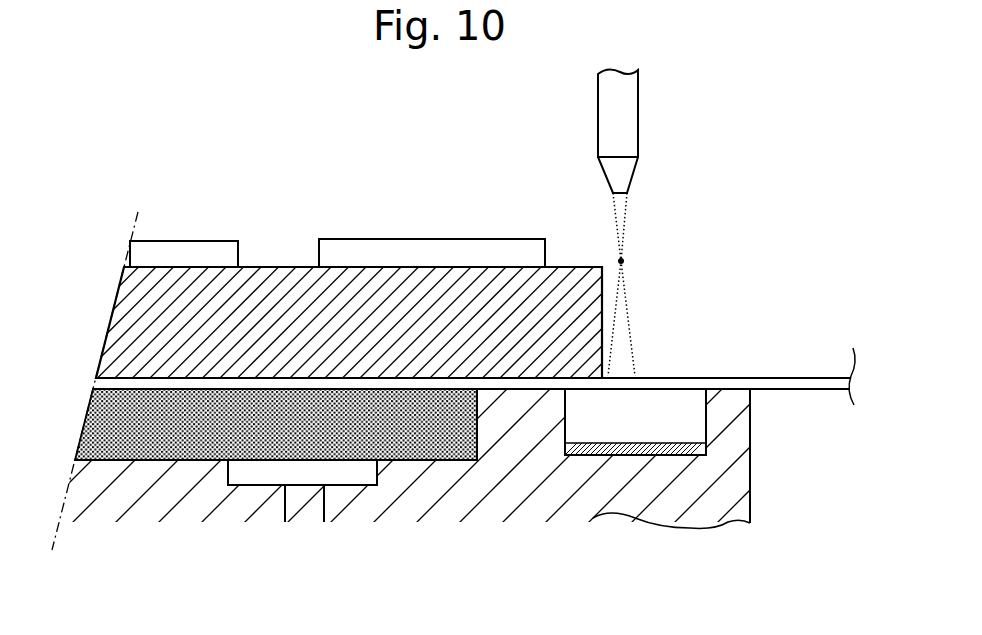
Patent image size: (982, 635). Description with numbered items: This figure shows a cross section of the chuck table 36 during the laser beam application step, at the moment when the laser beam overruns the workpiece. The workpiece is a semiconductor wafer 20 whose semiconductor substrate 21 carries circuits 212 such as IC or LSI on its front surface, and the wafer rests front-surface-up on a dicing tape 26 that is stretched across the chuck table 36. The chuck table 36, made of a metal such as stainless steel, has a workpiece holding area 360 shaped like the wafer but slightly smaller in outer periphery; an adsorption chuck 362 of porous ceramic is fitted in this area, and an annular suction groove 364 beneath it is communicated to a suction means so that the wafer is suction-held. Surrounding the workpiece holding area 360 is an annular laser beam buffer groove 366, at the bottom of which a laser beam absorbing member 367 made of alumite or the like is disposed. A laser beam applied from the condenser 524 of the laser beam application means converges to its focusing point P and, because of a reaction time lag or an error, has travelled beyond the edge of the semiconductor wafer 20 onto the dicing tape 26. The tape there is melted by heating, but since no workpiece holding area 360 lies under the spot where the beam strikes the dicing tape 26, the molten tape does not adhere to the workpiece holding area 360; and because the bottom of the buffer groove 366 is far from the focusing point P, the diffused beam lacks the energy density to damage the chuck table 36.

The semiconductor wafer 20 is at (363, 231).
The semiconductor substrate 21 is at (127, 324).
The circuit 212 is at (378, 238).
The condenser 524 is at (638, 88).
The focusing point P is at (625, 260).
The dicing tape 26 is at (798, 377).
The chuck table 36 is at (462, 444).
The workpiece holding area 360 is at (237, 398).
The adsorption chuck 362 is at (153, 430).
The annular suction groove 364 is at (347, 477).
The laser beam buffer groove 366 is at (678, 402).
The laser beam absorbing member 367 is at (645, 452).